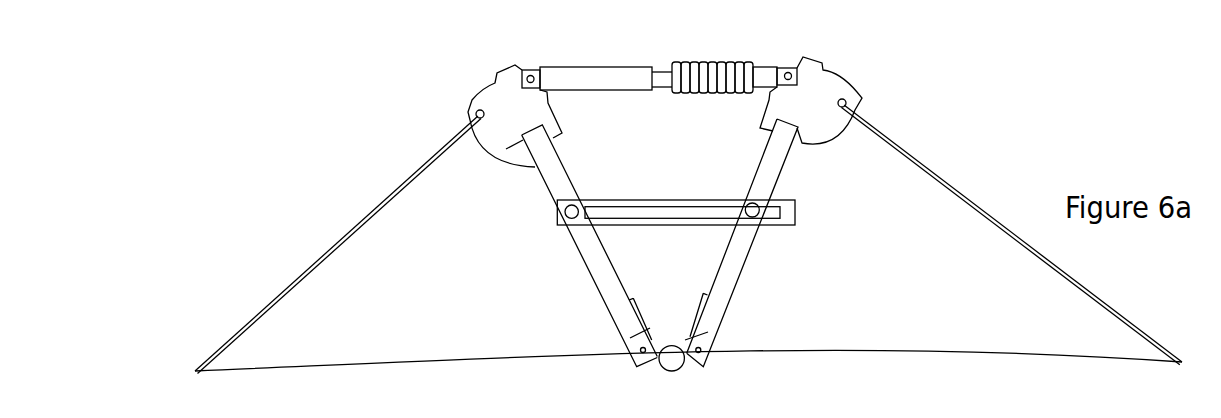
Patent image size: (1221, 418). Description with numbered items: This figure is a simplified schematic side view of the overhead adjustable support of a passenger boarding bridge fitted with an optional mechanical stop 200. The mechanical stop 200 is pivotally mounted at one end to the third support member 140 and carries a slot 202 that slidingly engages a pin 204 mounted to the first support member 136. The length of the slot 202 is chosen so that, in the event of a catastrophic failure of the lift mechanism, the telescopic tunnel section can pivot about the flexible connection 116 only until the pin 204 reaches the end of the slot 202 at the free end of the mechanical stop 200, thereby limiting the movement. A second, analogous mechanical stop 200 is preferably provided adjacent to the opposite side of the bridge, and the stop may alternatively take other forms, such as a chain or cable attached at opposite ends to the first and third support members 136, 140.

The flexible connection 116 is at (662, 378).
The first support member 136 is at (727, 313).
The third support member 140 is at (470, 120).
The mechanical stop 200 is at (800, 205).
The slot 202 is at (677, 208).
The pin 204 is at (755, 216).